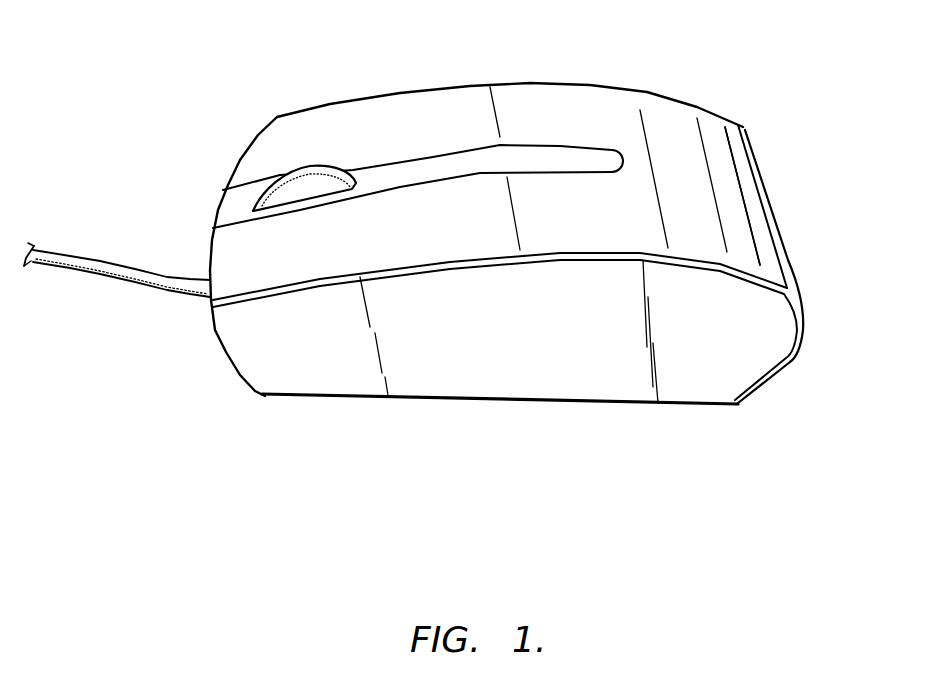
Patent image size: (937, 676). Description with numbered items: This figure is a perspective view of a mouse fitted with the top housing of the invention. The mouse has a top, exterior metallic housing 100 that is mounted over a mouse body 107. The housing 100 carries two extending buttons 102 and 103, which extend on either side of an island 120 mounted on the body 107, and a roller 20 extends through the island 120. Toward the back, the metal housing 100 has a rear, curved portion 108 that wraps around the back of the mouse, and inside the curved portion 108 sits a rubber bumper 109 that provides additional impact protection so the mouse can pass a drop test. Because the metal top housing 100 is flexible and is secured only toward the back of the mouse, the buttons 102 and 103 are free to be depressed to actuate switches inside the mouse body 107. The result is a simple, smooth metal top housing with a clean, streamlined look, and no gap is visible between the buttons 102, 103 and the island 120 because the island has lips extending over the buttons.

The metallic top housing 100 is at (660, 142).
The button 102 is at (402, 102).
The button 103 is at (448, 222).
The island 120 is at (220, 203).
The roller 20 is at (273, 240).
The mouse body 107 is at (600, 406).
The curved portion 108 is at (826, 333).
The rubber bumper 109 is at (773, 318).